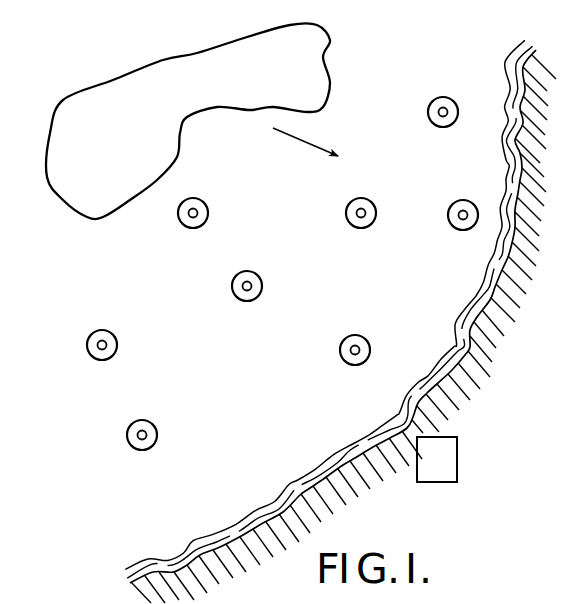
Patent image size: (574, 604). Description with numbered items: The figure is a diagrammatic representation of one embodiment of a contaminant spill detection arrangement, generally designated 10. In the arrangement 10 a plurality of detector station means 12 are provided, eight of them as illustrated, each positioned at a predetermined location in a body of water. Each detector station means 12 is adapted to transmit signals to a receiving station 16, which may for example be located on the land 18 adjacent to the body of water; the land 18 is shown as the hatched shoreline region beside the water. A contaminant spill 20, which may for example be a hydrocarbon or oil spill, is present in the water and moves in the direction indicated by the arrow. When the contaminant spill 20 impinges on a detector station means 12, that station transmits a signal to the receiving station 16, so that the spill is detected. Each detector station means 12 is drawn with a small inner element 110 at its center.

The contaminant spill detection arrangement 10 is at (462, 72).
The detector station means 12 is at (432, 124).
The transponder unit 110 is at (447, 116).
The receiving station 16 is at (430, 483).
The land 18 is at (493, 423).
The contaminant spill 20 is at (330, 57).